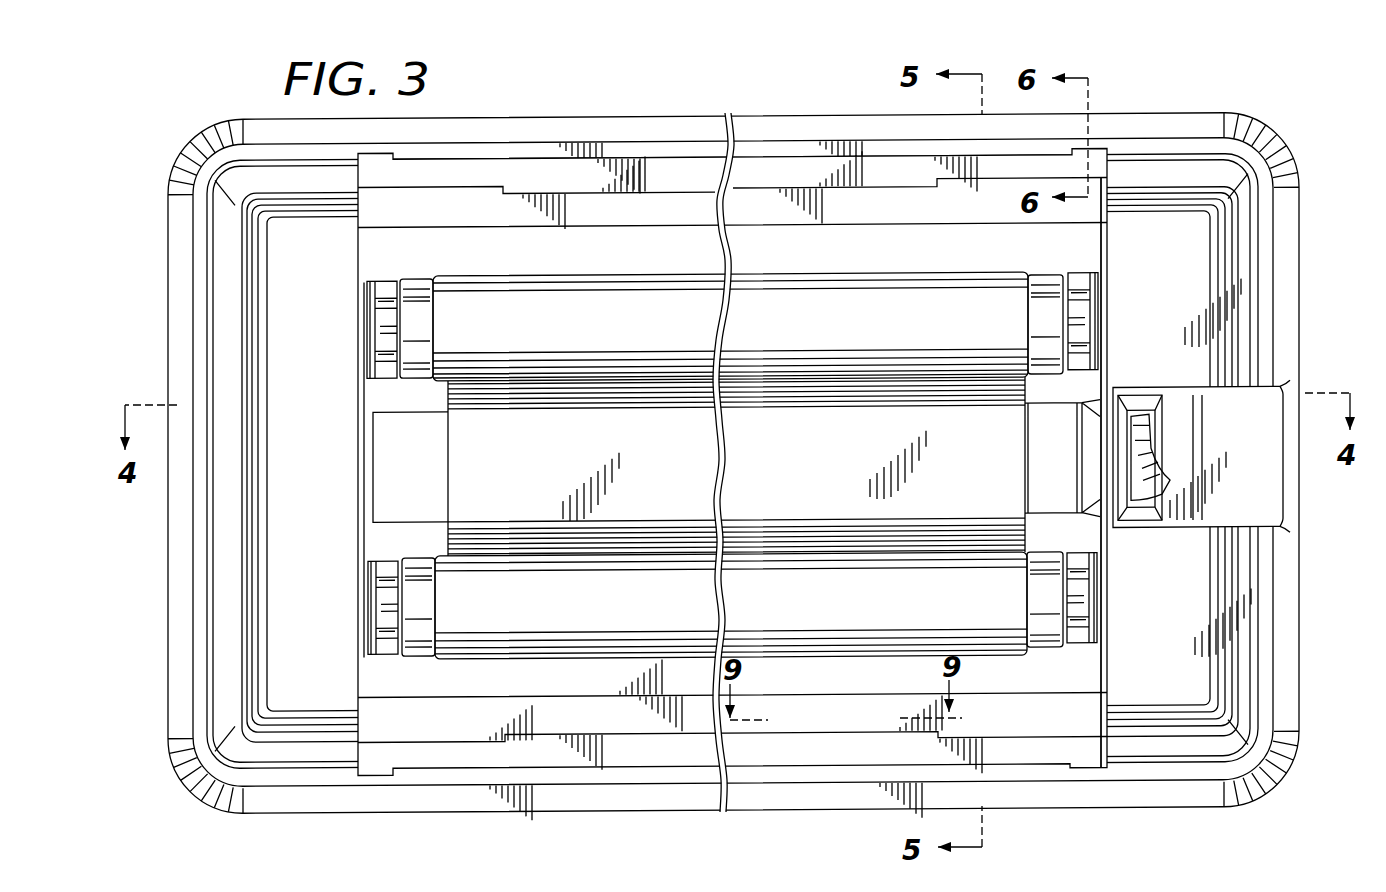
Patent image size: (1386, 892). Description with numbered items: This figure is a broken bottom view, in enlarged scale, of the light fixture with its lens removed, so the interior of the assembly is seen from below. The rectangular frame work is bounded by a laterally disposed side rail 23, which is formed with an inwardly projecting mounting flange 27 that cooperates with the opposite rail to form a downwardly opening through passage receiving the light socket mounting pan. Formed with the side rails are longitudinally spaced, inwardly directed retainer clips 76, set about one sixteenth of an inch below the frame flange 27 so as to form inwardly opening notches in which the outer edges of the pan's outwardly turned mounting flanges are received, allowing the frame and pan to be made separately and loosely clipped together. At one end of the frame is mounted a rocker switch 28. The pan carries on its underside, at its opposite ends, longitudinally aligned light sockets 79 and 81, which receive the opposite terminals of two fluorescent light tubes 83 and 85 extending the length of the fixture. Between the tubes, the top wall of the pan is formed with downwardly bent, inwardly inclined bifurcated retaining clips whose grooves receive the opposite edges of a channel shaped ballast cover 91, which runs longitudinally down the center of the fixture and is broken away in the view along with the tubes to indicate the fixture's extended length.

The side rail 23 is at (1010, 147).
The mounting flange 27 is at (1108, 168).
The rocker switch 28 is at (1160, 472).
The retainer clip 76 is at (630, 194).
The light socket 79 is at (372, 327).
The light socket 81 is at (1082, 316).
The fluorescent light tube 83 is at (652, 616).
The fluorescent light tube 85 is at (672, 337).
The ballast cover 91 is at (795, 477).